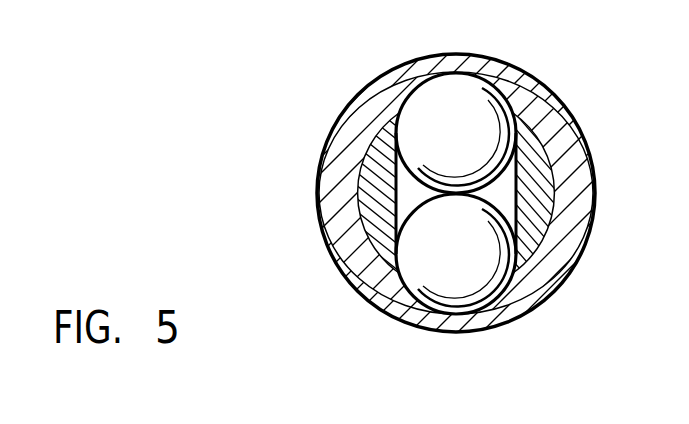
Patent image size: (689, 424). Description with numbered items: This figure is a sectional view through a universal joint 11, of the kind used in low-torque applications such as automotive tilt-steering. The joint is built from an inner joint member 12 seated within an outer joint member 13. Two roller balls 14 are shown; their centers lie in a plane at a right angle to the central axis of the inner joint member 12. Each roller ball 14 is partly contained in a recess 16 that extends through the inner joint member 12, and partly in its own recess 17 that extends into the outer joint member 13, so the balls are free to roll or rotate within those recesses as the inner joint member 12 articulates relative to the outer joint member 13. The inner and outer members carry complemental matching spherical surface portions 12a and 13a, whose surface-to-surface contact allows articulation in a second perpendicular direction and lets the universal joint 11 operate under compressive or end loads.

The universal joint 11 is at (366, 322).
The inner joint member 12 is at (378, 212).
The spherical surface portion 12a is at (356, 183).
The outer joint member 13 is at (556, 148).
The spherical surface portion 13a is at (330, 258).
The roller ball 14 is at (518, 72).
The recess 16 is at (592, 160).
The recess 17 is at (424, 72).